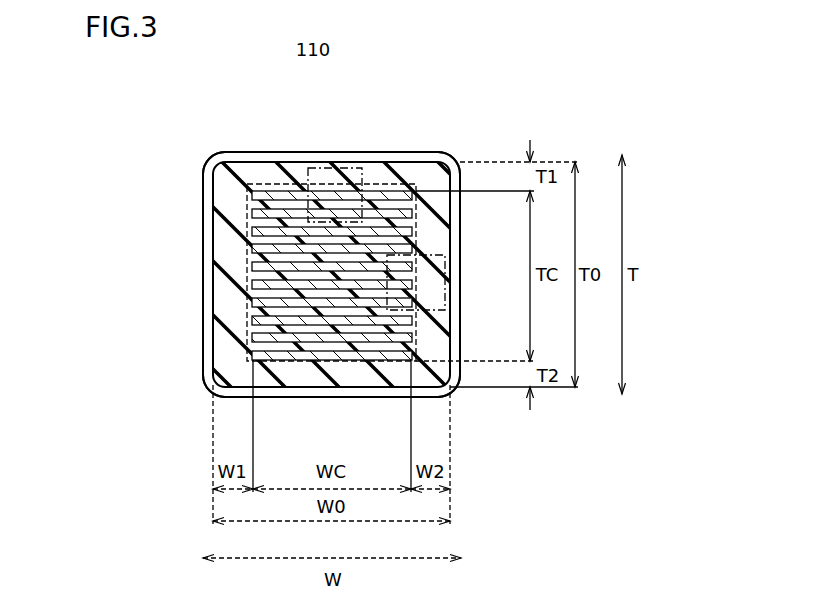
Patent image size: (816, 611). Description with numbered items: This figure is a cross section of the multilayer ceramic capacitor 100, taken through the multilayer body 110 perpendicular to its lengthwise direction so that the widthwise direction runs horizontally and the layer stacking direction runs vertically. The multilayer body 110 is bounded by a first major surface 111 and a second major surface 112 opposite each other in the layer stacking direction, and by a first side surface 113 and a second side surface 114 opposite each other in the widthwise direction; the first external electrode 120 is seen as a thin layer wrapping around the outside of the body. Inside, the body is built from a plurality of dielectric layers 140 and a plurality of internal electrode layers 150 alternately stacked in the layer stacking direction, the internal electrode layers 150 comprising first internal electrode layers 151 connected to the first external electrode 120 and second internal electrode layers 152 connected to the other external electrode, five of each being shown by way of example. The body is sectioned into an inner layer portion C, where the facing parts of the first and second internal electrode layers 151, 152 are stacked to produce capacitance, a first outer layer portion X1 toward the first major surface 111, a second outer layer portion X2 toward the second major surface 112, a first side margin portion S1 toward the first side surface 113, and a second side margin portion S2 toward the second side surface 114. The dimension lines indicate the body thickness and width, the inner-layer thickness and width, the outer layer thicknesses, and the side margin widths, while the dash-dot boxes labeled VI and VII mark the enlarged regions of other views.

The multilayer ceramic capacitor 100 is at (467, 124).
The multilayer body 110 is at (373, 70).
The first major surface 111 is at (410, 157).
The second major surface 112 is at (363, 393).
The first side surface 113 is at (211, 230).
The second side surface 114 is at (452, 229).
The first external electrode 120 is at (208, 297).
The dielectric layers 140 is at (268, 176).
The internal electrode layers 150 is at (308, 105).
The first internal electrode layers 151 is at (330, 190).
The second internal electrode layers 152 is at (372, 209).
The first side margin portion S1 is at (235, 160).
The second side margin portion S2 is at (432, 160).
The first outer layer portion X1 is at (236, 179).
The second outer layer portion X2 is at (236, 372).
The inner layer portion C is at (446, 272).
The section VI is at (447, 296).
The section VII is at (306, 180).